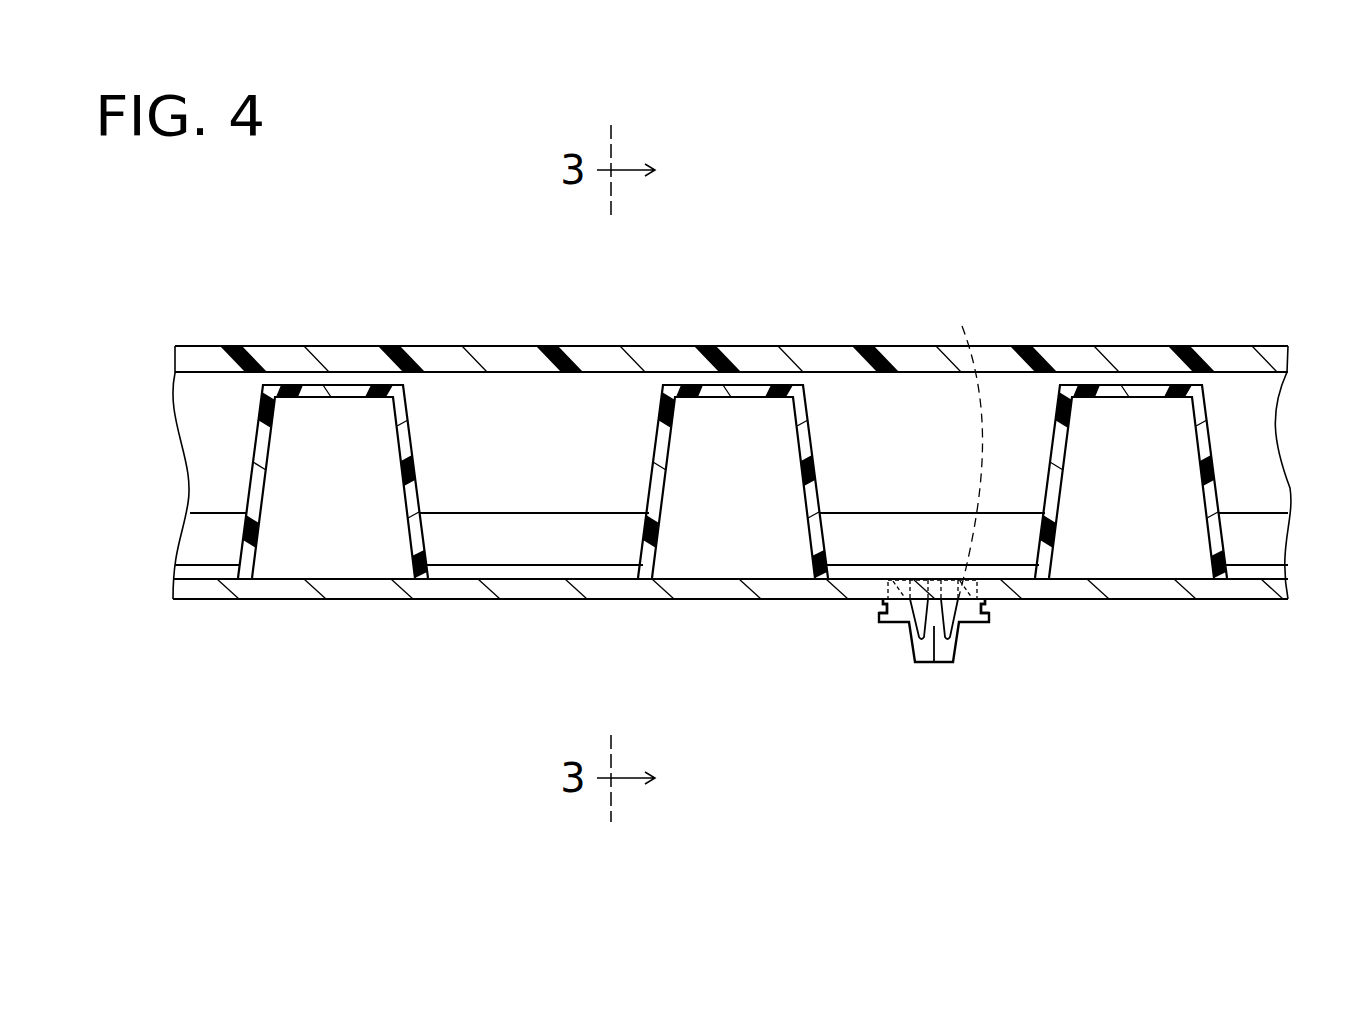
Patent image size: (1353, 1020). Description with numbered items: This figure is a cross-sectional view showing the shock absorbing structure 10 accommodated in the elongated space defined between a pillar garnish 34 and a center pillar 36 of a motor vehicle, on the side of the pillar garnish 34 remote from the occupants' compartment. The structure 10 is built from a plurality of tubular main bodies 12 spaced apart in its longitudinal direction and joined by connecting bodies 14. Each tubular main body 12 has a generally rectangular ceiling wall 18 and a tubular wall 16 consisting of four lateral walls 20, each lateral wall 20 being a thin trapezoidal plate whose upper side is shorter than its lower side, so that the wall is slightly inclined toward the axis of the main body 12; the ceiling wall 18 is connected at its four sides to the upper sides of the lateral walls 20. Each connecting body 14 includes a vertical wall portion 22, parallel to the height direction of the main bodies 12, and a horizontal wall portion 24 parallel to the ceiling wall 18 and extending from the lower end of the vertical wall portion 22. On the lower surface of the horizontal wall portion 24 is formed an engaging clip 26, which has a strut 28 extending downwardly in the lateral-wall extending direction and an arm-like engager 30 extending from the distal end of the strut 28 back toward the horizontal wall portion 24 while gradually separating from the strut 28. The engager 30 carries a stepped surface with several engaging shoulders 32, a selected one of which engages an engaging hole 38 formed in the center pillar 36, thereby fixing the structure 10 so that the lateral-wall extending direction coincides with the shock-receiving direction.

The shock absorbing structure 10 is at (478, 474).
The tubular main body 12 is at (772, 378).
The connecting body 14 is at (523, 500).
The tubular wall 16 is at (816, 410).
The ceiling wall 18 is at (750, 391).
The lateral wall 20 is at (658, 446).
The vertical wall portion 22 is at (460, 550).
The horizontal wall portion 24 is at (522, 572).
The engaging clip 26 is at (948, 685).
The strut 28 is at (936, 628).
The engager 30 is at (916, 637).
The engaging shoulder 32 is at (883, 600).
The pillar garnish 34 is at (520, 358).
The center pillar 36 is at (597, 590).
The engaging hole 38 is at (960, 448).